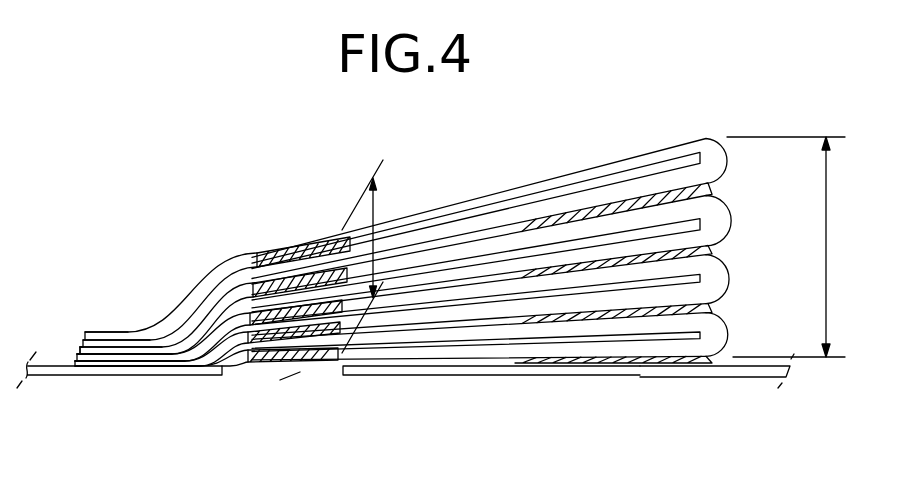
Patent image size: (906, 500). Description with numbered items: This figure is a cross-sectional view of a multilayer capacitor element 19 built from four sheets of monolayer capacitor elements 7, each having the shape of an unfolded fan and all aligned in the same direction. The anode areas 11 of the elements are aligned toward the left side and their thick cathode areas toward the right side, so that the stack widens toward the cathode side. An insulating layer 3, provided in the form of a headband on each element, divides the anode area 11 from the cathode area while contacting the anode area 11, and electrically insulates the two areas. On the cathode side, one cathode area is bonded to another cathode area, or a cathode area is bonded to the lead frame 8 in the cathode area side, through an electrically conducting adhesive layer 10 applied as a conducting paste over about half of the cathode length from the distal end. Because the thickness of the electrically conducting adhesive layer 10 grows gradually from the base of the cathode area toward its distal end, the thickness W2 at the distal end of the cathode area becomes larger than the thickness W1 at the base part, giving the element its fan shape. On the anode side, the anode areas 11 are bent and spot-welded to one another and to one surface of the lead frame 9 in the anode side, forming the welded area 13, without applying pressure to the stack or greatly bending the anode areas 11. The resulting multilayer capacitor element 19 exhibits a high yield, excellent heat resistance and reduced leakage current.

The insulating layer 3 is at (290, 287).
The monolayer capacitor element 7 is at (728, 152).
The lead frame in the cathode area side 8 is at (727, 377).
The lead frame in the anode side 9 is at (57, 377).
The electrically conducting adhesive layer 10 is at (607, 364).
The anode area 11 is at (117, 343).
The welded area 13 is at (111, 364).
The multilayer capacitor element 19 is at (296, 382).
The thickness of the base part of the cathode area W1 is at (378, 212).
The thickness of the distal end of the cathode area W2 is at (804, 247).